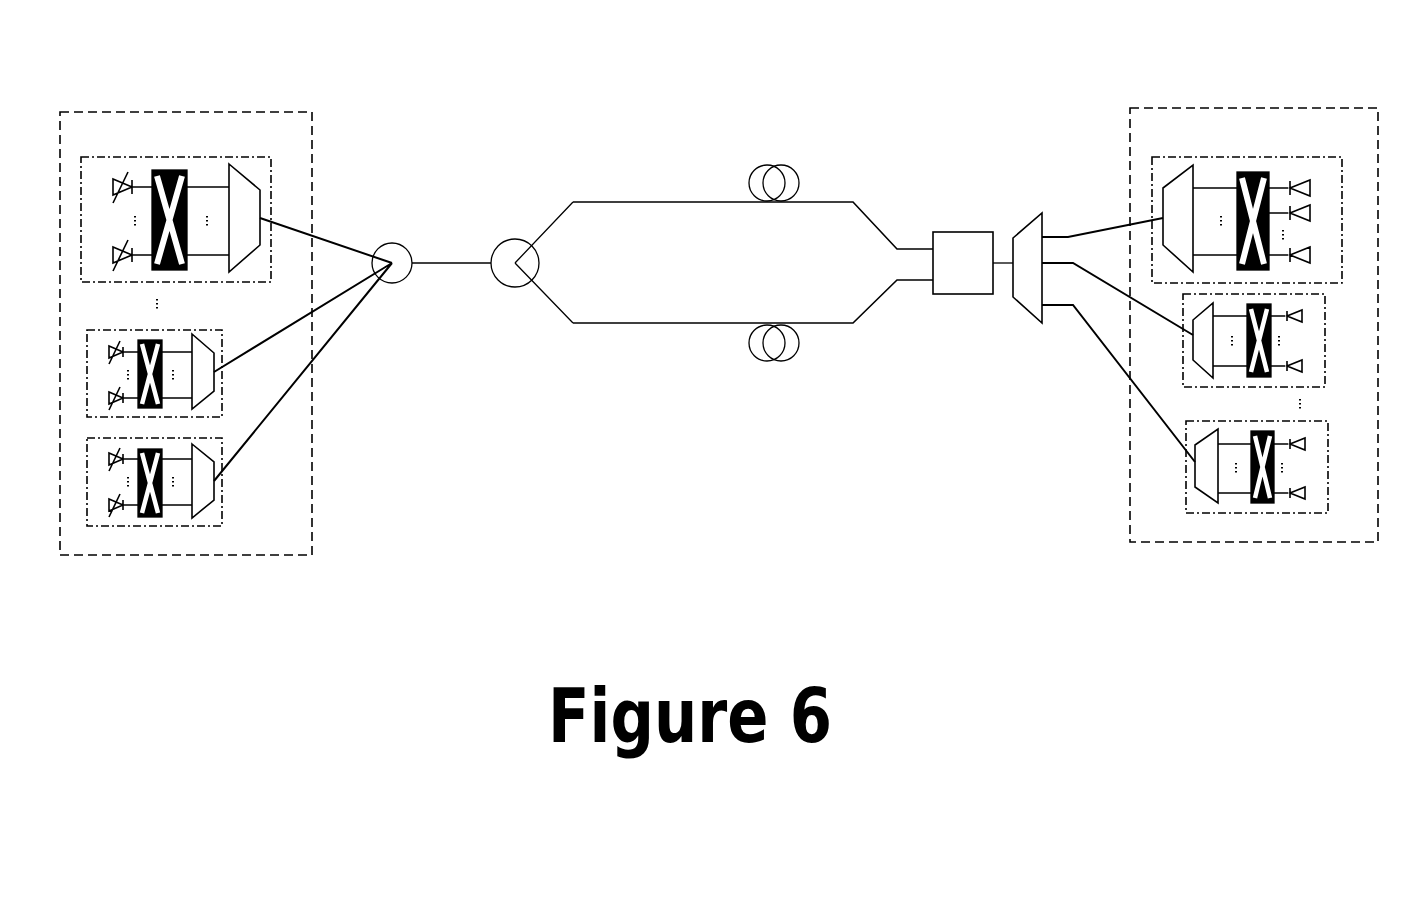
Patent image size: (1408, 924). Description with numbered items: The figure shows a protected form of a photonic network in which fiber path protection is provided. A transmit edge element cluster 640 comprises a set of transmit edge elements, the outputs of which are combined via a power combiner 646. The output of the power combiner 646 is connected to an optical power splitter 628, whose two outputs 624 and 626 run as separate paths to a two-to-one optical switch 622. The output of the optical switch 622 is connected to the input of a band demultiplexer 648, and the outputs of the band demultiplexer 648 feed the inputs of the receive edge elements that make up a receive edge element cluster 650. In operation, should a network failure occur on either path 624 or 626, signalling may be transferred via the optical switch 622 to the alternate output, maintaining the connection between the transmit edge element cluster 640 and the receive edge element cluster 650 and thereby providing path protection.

The transmit edge element cluster 640 is at (212, 112).
The power combiner 646 is at (392, 243).
The optical power splitter 628 is at (512, 268).
The output of optical power splitter 624 is at (658, 202).
The output of optical power splitter 626 is at (650, 323).
The 2:1 optical switch 622 is at (973, 232).
The band demultiplexer 648 is at (1032, 220).
The receive edge element cluster 650 is at (1237, 108).